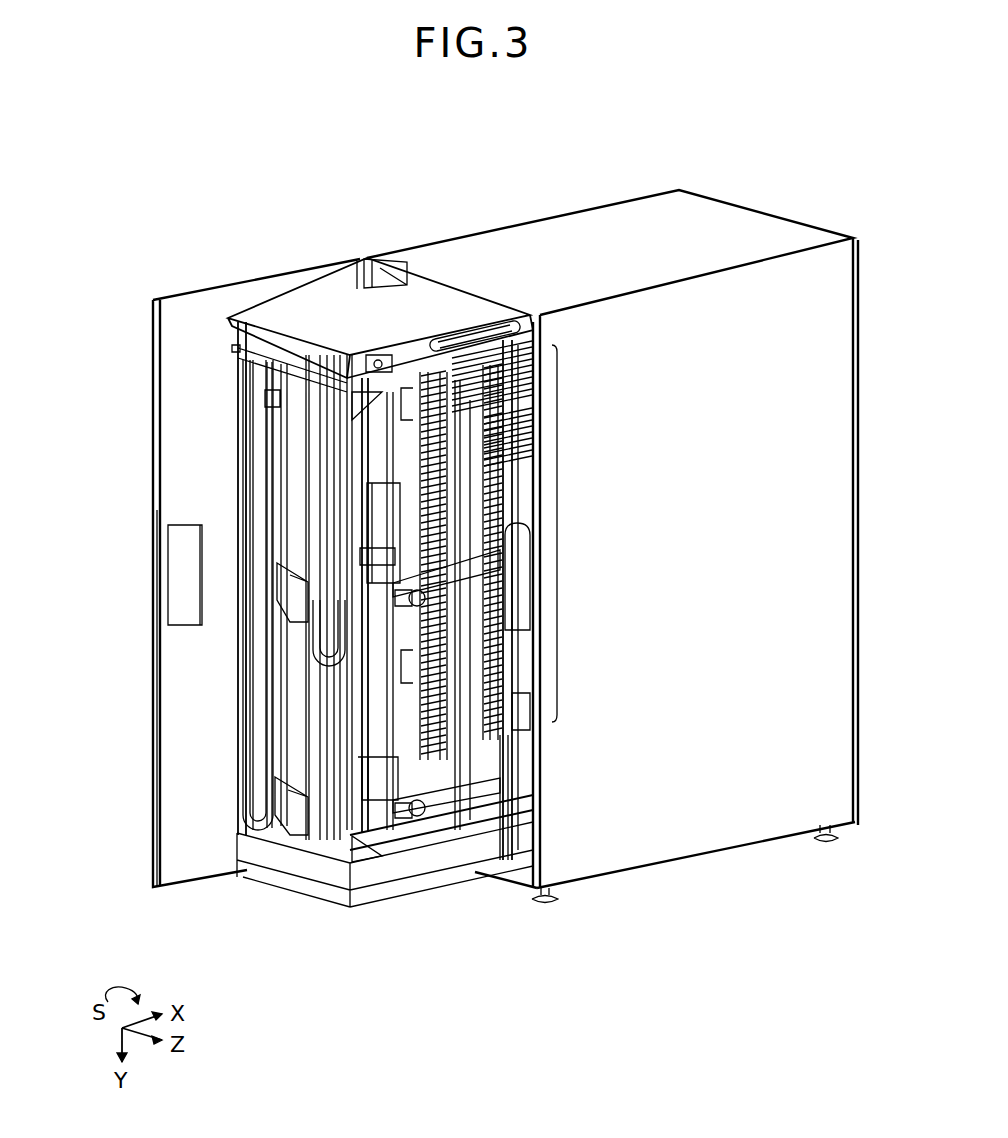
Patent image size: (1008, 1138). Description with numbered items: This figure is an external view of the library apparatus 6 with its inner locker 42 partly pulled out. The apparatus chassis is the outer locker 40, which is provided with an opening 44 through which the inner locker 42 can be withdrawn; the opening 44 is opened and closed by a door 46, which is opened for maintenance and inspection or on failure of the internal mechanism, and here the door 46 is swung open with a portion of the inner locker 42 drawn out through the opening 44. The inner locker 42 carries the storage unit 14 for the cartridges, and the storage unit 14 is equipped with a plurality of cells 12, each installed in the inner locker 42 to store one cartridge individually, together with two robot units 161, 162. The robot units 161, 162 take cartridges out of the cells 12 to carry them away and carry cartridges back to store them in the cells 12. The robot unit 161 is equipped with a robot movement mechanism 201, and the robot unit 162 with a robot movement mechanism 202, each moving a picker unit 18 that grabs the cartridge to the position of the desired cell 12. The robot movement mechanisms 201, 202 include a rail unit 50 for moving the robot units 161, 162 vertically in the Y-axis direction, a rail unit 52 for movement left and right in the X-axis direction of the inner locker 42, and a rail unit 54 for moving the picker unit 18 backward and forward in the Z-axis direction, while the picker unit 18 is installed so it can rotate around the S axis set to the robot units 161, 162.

The library apparatus 6 is at (668, 121).
The cell 12 is at (505, 733).
The storage unit 14 is at (557, 528).
The picker unit 18 is at (367, 550).
The outer locker 40 is at (720, 207).
The inner locker 42 is at (283, 312).
The opening 44 is at (403, 277).
The door 46 is at (172, 820).
The rail unit 50 is at (286, 836).
The rail unit 52 is at (345, 618).
The rail unit 54 is at (398, 612).
The robot unit 161 is at (400, 822).
The robot unit 162 is at (372, 572).
The robot movement mechanism 201 is at (437, 816).
The robot movement mechanism 202 is at (280, 595).